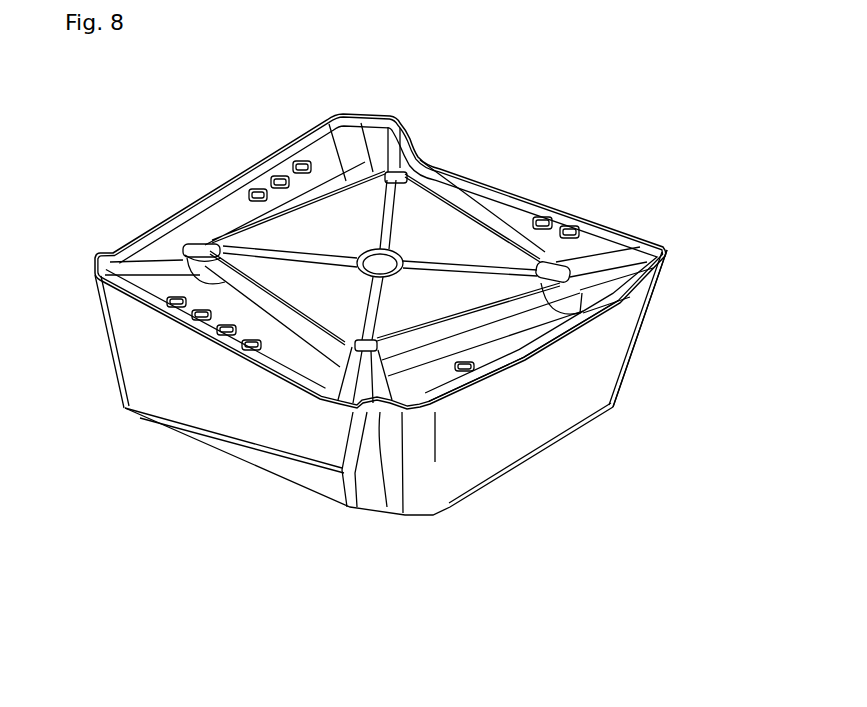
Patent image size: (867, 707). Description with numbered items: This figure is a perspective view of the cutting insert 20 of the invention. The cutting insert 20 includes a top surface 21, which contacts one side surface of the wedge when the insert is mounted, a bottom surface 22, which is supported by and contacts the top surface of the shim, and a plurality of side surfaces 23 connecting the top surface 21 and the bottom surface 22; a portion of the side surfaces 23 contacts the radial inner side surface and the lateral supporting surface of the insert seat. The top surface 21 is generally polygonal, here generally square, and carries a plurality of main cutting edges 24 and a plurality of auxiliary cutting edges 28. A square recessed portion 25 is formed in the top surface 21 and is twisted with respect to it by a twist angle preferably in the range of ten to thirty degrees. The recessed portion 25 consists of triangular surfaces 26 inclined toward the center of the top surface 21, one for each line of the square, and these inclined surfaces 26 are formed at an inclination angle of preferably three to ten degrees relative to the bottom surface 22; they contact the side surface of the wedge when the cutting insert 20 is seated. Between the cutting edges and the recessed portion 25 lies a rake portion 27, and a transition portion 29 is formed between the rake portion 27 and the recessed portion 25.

The cutting insert 20 is at (565, 108).
The top surface 21 is at (477, 234).
The bottom surface 22 is at (513, 471).
The side surfaces 23 is at (606, 349).
The main cutting edges 24 is at (532, 358).
The recessed portion 25 is at (414, 226).
The triangular surfaces 26 is at (443, 210).
The rake portion 27 is at (595, 238).
The auxiliary cutting edges 28 is at (387, 512).
The transition portion 29 is at (300, 322).